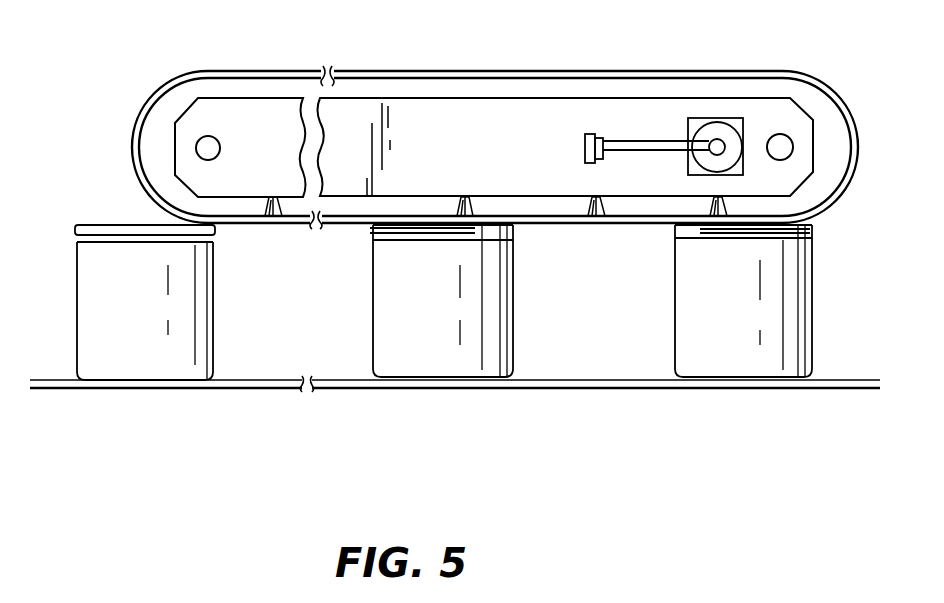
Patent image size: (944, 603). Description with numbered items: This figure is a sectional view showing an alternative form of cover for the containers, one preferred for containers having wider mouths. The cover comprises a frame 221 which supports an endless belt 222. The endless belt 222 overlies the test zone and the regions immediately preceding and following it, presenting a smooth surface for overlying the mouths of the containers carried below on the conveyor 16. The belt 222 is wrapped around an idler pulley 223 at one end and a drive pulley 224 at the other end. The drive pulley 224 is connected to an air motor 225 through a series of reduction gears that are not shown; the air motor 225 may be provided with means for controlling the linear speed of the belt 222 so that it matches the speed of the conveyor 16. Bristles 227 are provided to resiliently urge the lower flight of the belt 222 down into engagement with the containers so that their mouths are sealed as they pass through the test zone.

The conveyor 16 is at (342, 389).
The frame 221 is at (383, 106).
The endless belt 222 is at (593, 72).
The idler pulley 223 is at (152, 135).
The drive pulley 224 is at (810, 95).
The air motor 225 is at (693, 125).
The bristles 227 is at (463, 197).